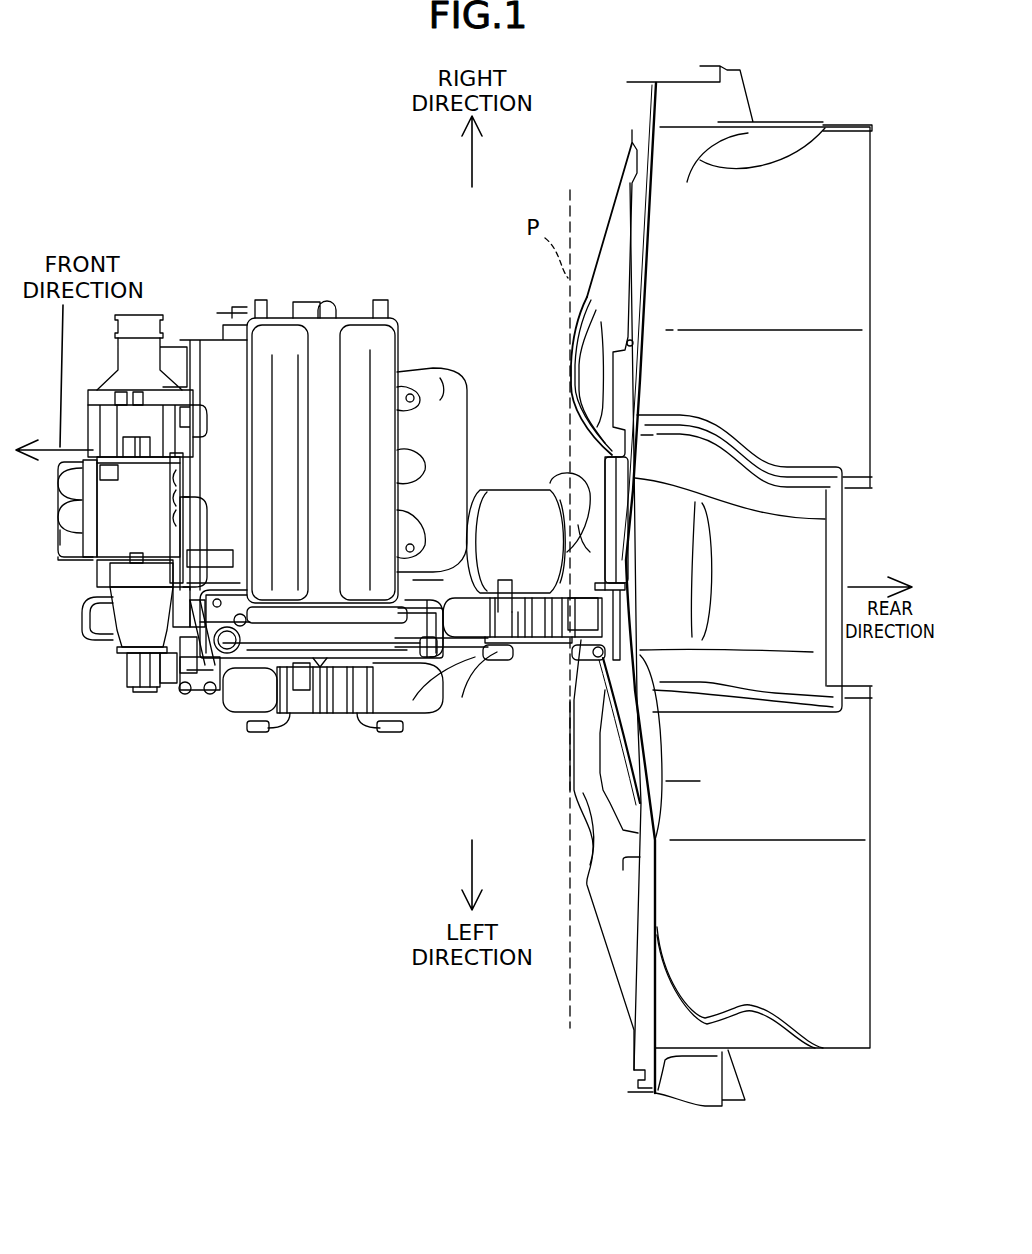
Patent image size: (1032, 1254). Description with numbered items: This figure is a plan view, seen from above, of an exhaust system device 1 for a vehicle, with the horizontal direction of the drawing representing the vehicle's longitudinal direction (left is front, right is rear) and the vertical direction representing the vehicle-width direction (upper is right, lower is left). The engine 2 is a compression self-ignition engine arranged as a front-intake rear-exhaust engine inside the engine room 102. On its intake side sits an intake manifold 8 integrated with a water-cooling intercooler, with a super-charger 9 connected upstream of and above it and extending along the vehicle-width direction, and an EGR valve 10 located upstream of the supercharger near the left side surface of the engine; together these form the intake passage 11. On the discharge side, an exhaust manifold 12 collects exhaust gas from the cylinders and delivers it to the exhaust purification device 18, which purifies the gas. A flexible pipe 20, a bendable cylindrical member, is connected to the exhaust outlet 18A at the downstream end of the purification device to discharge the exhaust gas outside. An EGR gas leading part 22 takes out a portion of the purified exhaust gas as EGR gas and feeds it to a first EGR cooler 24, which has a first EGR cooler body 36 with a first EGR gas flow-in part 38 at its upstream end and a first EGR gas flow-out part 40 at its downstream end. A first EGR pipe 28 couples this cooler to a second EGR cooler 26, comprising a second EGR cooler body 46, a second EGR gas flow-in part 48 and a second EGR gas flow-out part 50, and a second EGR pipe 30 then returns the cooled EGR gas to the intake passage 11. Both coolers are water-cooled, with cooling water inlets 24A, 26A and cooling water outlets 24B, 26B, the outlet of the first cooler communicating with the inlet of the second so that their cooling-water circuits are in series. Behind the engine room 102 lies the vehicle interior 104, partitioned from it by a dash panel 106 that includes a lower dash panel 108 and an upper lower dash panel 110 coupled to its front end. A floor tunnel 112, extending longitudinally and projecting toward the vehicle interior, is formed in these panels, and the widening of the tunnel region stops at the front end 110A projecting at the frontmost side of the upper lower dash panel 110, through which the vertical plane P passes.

The exhaust system device 1 is at (489, 332).
The engine 2 is at (282, 357).
The intake manifold 8 is at (57, 537).
The super-charger 9 is at (122, 423).
The EGR valve 10 is at (138, 680).
The intake passage 11 is at (132, 539).
The exhaust manifold 12 is at (432, 378).
The exhaust purification device 18 is at (477, 497).
The exhaust outlet 18A is at (567, 480).
The flexible pipe 20 is at (595, 560).
The EGR gas leading part 22 is at (587, 560).
The first EGR cooler 24 is at (500, 701).
The cooling water inlet 24A is at (562, 660).
The cooling water outlet 24B is at (495, 657).
The second EGR cooler 26 is at (315, 711).
The cooling water inlet 26A is at (388, 728).
The cooling water outlet 26B is at (242, 727).
The first EGR pipe 28 is at (420, 697).
The second EGR pipe 30 is at (230, 702).
The first EGR cooler body 36 is at (522, 637).
The first EGR gas flow-in part 38 is at (570, 700).
The first EGR gas flow-out part 40 is at (466, 628).
The second EGR cooler body 46 is at (320, 697).
The second EGR gas flow-in part 48 is at (393, 695).
The second EGR gas flow-out part 50 is at (277, 695).
The engine room 102 is at (332, 969).
The vehicle interior 104 is at (753, 943).
The dash panel 106 is at (772, 143).
The lower dash panel 108 is at (848, 645).
The upper lower dash panel 110 is at (620, 217).
The front end 110A is at (567, 378).
The floor tunnel 112 is at (848, 505).